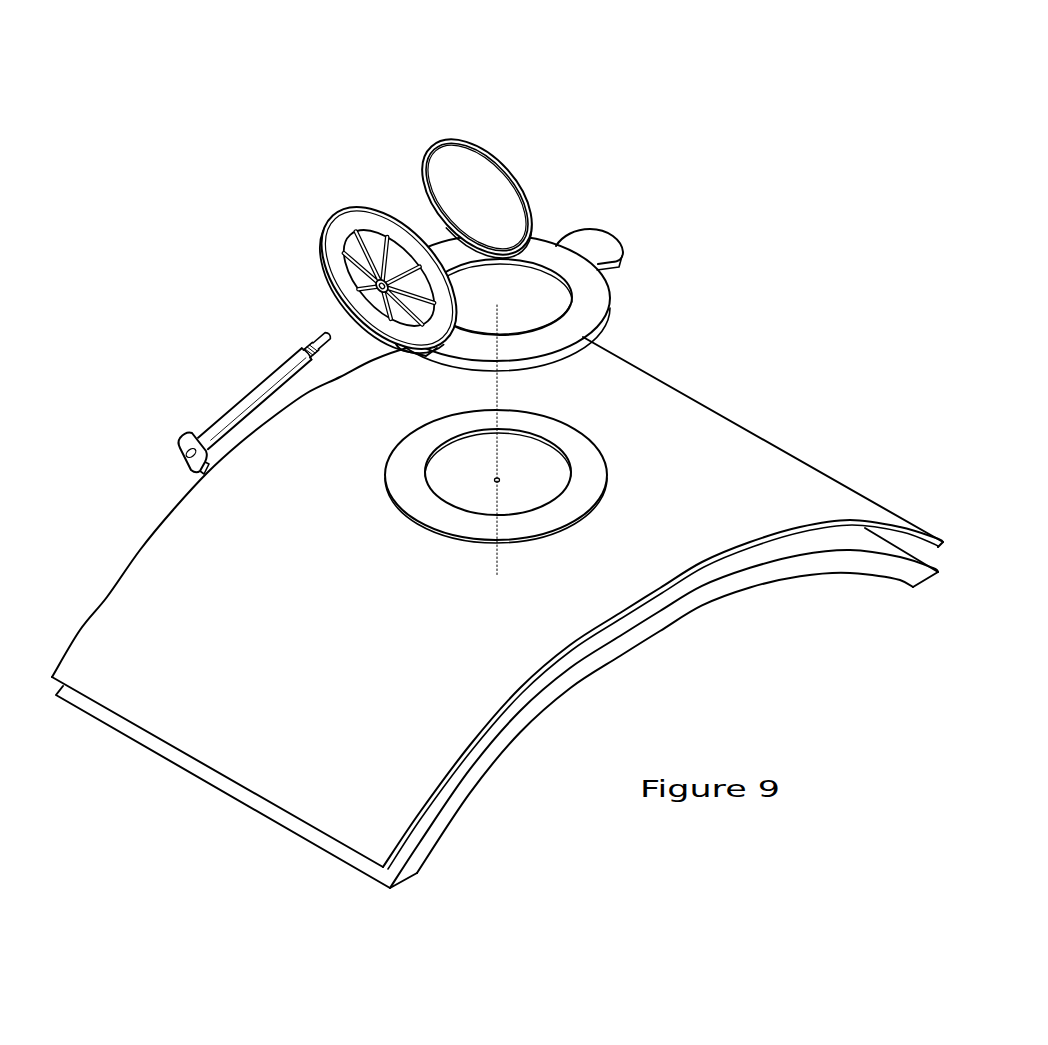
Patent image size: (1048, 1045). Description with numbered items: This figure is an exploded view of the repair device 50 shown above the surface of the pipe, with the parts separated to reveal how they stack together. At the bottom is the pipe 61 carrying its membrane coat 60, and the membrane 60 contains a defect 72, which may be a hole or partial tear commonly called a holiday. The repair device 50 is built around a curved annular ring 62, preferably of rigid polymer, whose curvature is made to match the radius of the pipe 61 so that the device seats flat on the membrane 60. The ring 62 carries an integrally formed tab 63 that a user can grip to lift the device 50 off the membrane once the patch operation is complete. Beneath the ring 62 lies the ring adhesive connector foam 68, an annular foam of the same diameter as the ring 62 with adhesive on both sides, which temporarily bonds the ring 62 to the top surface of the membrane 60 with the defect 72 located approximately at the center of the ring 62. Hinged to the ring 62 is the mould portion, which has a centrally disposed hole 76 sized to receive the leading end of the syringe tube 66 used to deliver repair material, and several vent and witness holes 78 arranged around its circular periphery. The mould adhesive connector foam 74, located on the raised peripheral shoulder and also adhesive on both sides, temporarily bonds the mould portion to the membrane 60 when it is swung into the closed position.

The repair device 50 is at (333, 223).
The membrane coat 60 is at (797, 528).
The pipe 61 is at (747, 578).
The ring 62 is at (585, 305).
The tab 63 is at (598, 246).
The syringe tube 66 is at (247, 386).
The ring adhesive connector foam 68 is at (585, 474).
The defect 72 is at (503, 480).
The mould adhesive connector foam 74 is at (436, 144).
The centrally disposed hole 76 is at (381, 289).
The vent and witness holes 78 is at (350, 239).